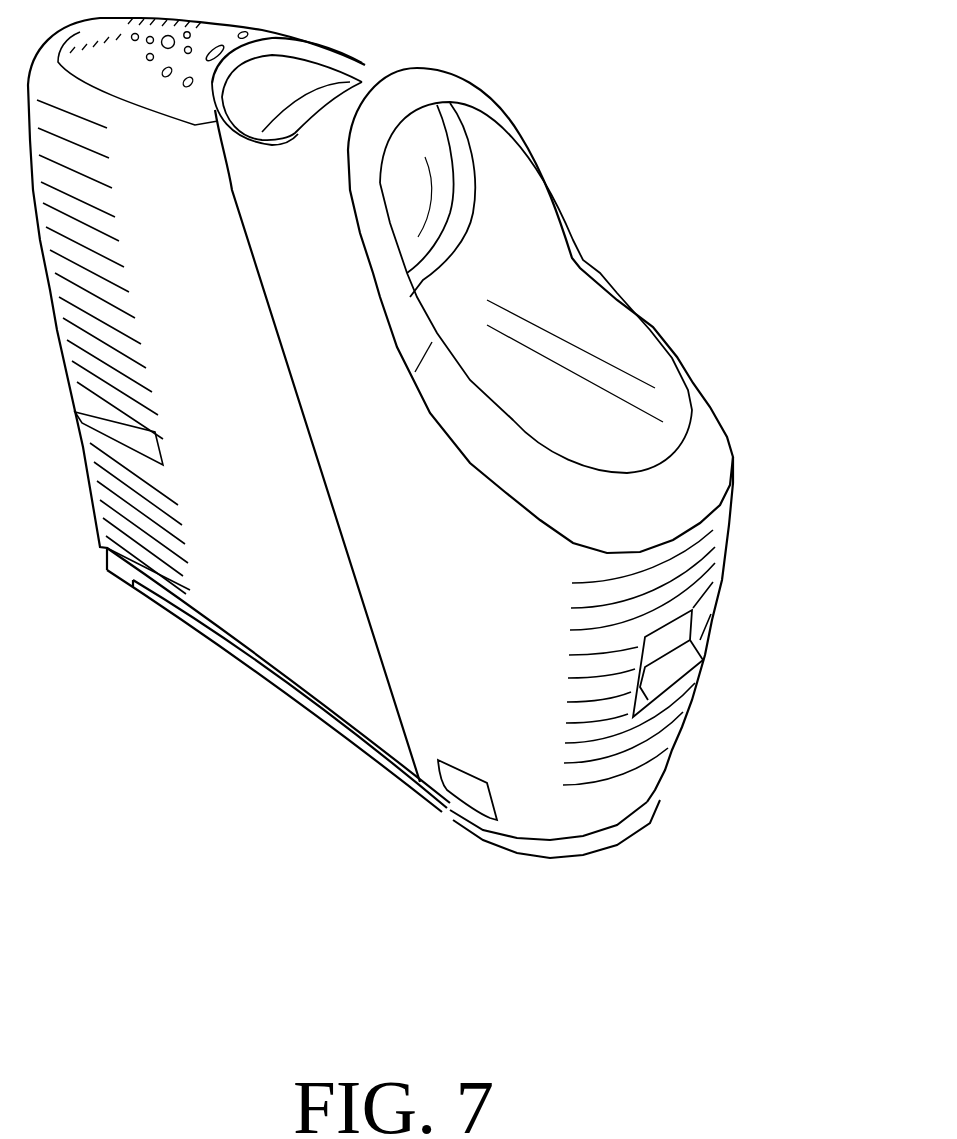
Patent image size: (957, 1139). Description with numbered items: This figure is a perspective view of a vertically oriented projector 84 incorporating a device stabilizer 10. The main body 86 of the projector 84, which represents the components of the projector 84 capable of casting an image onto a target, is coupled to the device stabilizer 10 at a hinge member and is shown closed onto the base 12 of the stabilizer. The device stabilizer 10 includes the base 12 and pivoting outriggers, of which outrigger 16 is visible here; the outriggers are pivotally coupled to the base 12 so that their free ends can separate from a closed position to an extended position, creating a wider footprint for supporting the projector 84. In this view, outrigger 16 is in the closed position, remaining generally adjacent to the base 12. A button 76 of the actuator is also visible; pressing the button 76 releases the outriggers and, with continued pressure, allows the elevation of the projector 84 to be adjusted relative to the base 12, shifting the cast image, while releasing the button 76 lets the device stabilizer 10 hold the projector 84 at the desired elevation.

The device stabilizer 10 is at (348, 773).
The base 12 is at (618, 828).
The outrigger 16 is at (272, 684).
The button 76 is at (478, 800).
The projector 84 is at (565, 107).
The main body 86 is at (715, 470).